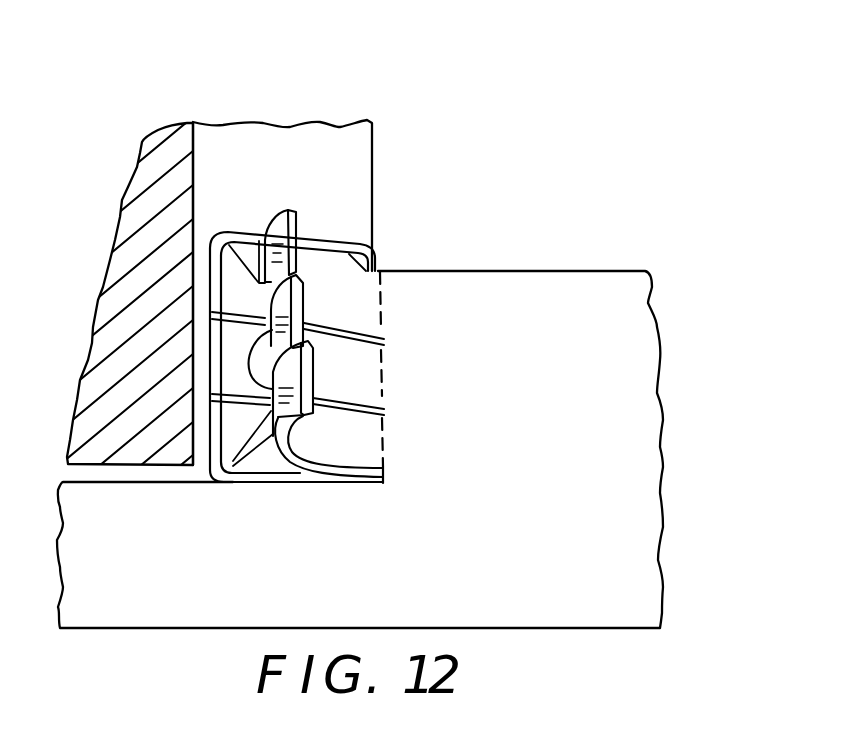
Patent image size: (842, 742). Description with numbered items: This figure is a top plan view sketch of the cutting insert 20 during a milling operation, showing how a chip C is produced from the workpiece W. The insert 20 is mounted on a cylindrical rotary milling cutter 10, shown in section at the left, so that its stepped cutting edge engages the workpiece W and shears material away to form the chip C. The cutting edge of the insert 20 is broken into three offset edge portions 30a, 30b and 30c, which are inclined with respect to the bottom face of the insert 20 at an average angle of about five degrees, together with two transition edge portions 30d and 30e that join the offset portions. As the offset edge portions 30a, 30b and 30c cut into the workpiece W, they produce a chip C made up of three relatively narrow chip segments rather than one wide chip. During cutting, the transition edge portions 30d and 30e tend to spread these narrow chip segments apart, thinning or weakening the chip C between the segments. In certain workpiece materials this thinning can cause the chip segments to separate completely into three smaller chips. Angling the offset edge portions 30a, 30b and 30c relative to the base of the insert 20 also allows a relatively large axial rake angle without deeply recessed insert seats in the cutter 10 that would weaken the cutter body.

The rotary milling cutter 10 is at (112, 122).
The cutting insert 20 is at (390, 234).
The offset edge portion 30a is at (383, 432).
The offset edge portion 30b is at (383, 358).
The offset edge portion 30c is at (377, 283).
The transition edge portion 30d is at (383, 407).
The transition edge portion 30e is at (383, 333).
The chip C is at (361, 309).
The workpiece W is at (704, 470).